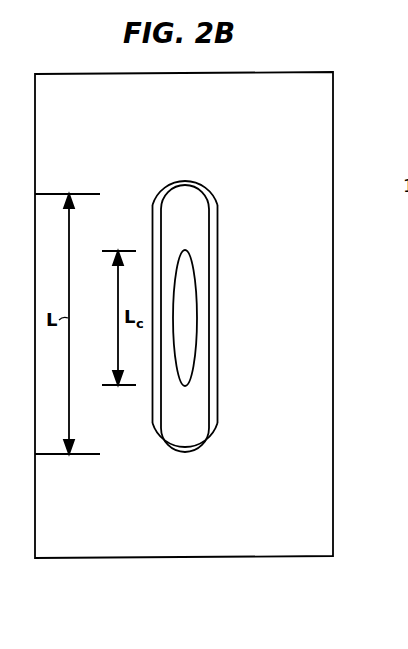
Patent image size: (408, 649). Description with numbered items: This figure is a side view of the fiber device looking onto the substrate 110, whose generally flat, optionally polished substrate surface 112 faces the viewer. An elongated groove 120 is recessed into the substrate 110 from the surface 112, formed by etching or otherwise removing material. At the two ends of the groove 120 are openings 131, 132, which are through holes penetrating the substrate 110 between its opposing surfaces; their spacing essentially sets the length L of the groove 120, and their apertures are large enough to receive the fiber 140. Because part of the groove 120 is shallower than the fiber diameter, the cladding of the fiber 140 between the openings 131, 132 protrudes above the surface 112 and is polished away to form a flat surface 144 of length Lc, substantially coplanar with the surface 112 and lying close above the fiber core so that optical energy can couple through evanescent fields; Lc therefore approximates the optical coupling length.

The substrate 110 is at (334, 427).
The substrate surface 112 is at (308, 550).
The elongated groove 120 is at (215, 378).
The opening 131 is at (186, 460).
The opening 132 is at (192, 170).
The fiber 140 is at (192, 233).
The flat surface 144 is at (186, 290).